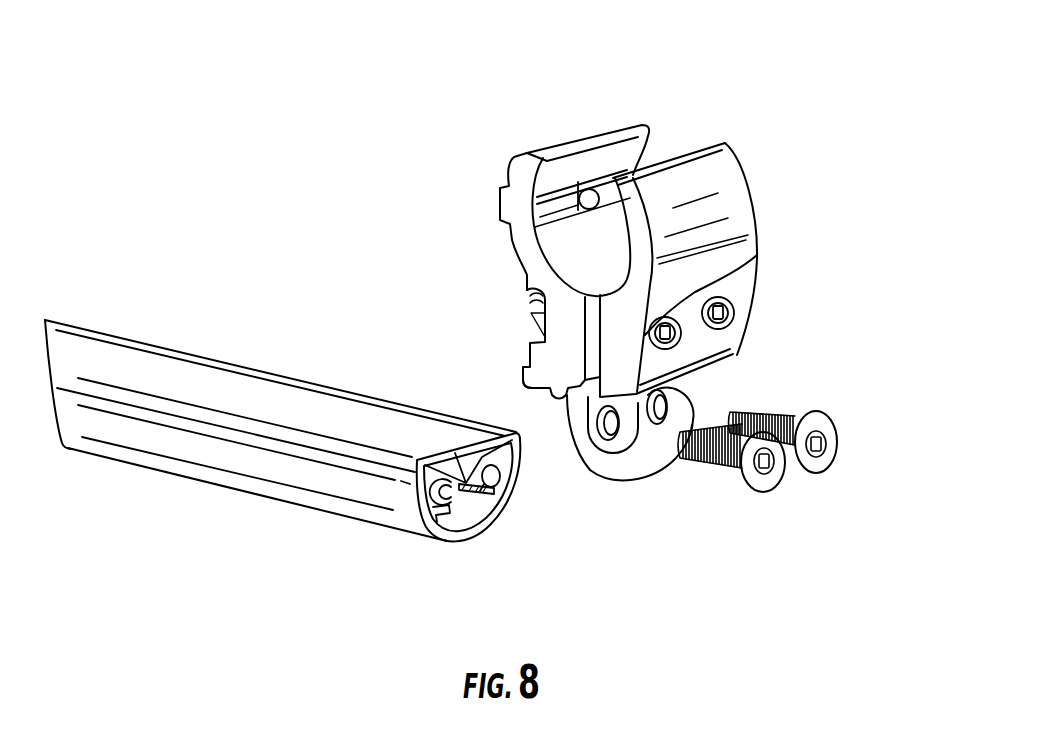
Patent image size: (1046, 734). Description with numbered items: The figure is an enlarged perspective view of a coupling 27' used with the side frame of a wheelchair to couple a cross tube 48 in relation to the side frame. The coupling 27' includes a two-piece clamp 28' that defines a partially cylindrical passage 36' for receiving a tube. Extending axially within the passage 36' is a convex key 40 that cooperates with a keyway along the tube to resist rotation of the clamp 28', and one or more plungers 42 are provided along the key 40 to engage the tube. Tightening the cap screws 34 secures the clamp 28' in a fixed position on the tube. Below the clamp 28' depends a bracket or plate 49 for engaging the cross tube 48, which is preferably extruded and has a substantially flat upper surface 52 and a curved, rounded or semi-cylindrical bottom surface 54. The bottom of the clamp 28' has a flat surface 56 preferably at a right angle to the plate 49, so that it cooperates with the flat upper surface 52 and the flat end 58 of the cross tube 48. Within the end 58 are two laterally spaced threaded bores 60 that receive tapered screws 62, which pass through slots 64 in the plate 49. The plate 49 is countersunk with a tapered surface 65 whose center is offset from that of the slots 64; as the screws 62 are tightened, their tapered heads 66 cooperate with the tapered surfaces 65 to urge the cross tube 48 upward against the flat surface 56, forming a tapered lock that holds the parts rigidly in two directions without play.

The coupling 27' is at (661, 298).
The two-piece clamp 28' is at (604, 297).
The cap screws 34 is at (673, 312).
The partially cylindrical passage 36' is at (536, 227).
The convex key 40 is at (555, 206).
The plungers 42 is at (600, 198).
The cross tube 48 is at (163, 300).
The bracket or plate 49 is at (663, 493).
The flat upper surface 52 is at (305, 393).
The bottom surface 54 is at (313, 485).
The flat surface 56 is at (520, 390).
The flat end 58 is at (500, 550).
The threaded bores 60 is at (510, 497).
The tapered screws 62 is at (803, 487).
The slots 64 is at (602, 450).
The tapered surface 65 is at (600, 423).
The tapered heads 66 is at (827, 423).